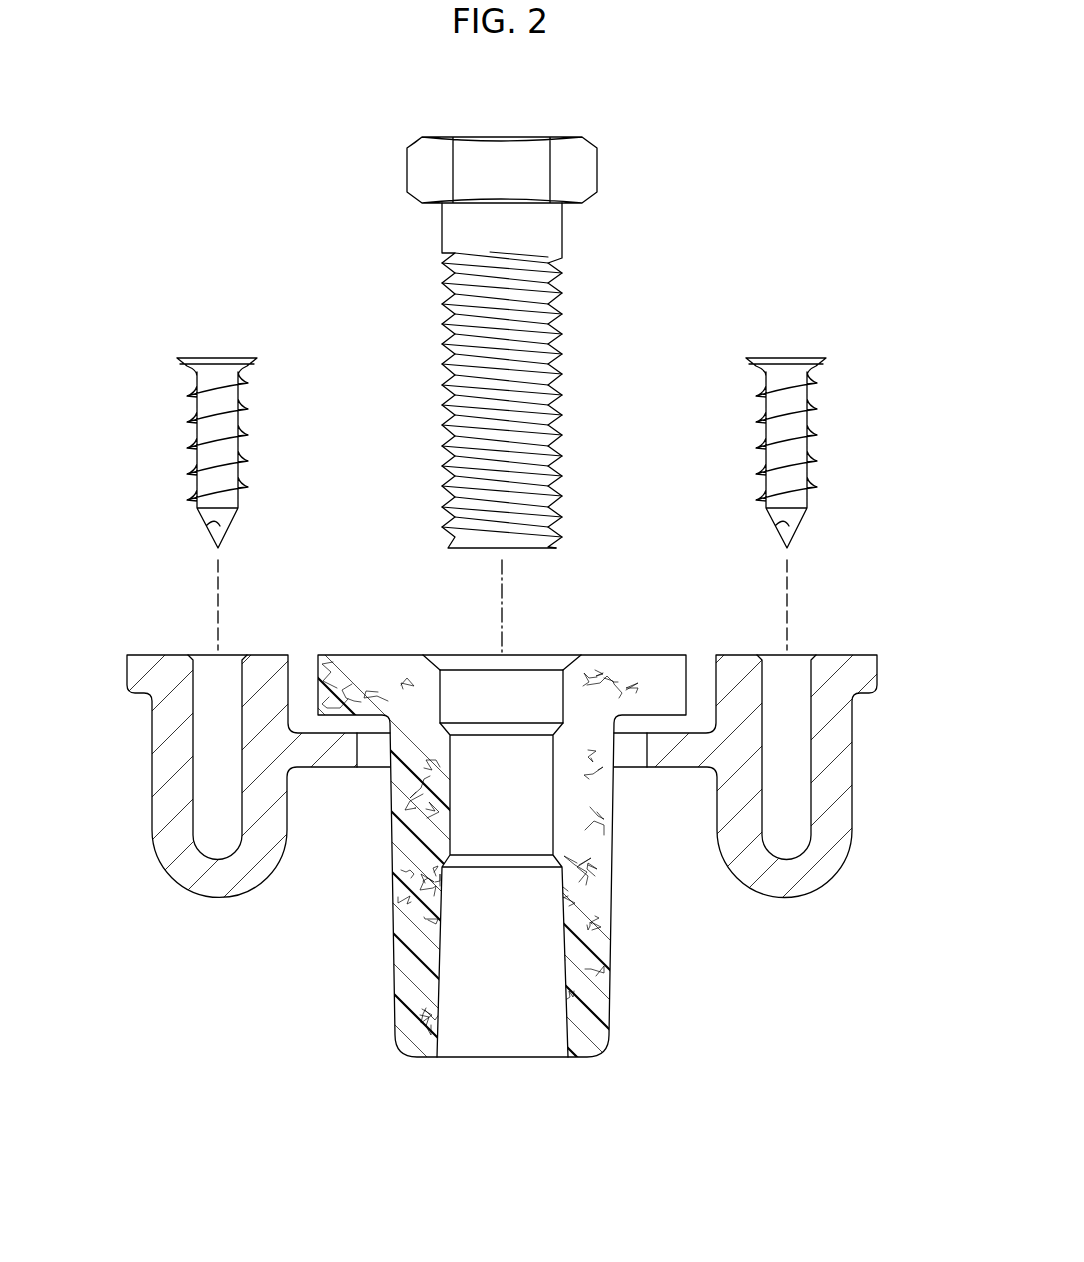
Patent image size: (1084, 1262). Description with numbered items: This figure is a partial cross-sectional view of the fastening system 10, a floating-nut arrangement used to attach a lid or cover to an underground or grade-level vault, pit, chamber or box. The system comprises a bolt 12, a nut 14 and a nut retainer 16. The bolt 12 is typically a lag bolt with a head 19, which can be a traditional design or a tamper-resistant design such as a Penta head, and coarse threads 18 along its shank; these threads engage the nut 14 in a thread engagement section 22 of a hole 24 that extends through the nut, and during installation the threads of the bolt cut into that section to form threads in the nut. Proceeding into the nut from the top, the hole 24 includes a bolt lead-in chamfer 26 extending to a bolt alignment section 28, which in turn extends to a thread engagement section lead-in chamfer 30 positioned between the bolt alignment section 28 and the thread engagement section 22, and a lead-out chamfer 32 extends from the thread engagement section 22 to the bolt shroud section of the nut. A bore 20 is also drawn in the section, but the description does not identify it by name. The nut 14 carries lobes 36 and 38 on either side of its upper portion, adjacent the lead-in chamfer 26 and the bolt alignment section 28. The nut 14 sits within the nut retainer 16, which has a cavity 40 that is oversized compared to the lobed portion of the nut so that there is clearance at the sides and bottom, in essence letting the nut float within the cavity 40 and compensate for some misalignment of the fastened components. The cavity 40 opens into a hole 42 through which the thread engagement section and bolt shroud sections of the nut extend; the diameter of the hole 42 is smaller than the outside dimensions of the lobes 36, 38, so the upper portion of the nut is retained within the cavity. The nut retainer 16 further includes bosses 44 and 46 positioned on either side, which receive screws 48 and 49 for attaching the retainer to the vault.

The fastening system 10 is at (774, 218).
The bolt 12 is at (552, 394).
The nut 14 is at (365, 840).
The nut retainer 16 is at (542, 764).
The course threads 18 is at (560, 360).
The head 19 is at (582, 170).
The bore 20 is at (493, 765).
The thread engagement section 22 is at (603, 810).
The hole 24 is at (565, 1033).
The bolt lead-in chamfer 26 is at (570, 660).
The bolt alignment section 28 is at (443, 688).
The thread engagement section lead-in chamfer 30 is at (550, 723).
The lead-out chamfer 32 is at (557, 867).
The lobe 36 is at (357, 672).
The lobe 38 is at (638, 665).
The cavity 40 is at (307, 683).
The hole 42 is at (377, 755).
The boss 44 is at (178, 885).
The boss 46 is at (855, 790).
The screw 48 is at (215, 357).
The screw 49 is at (787, 360).